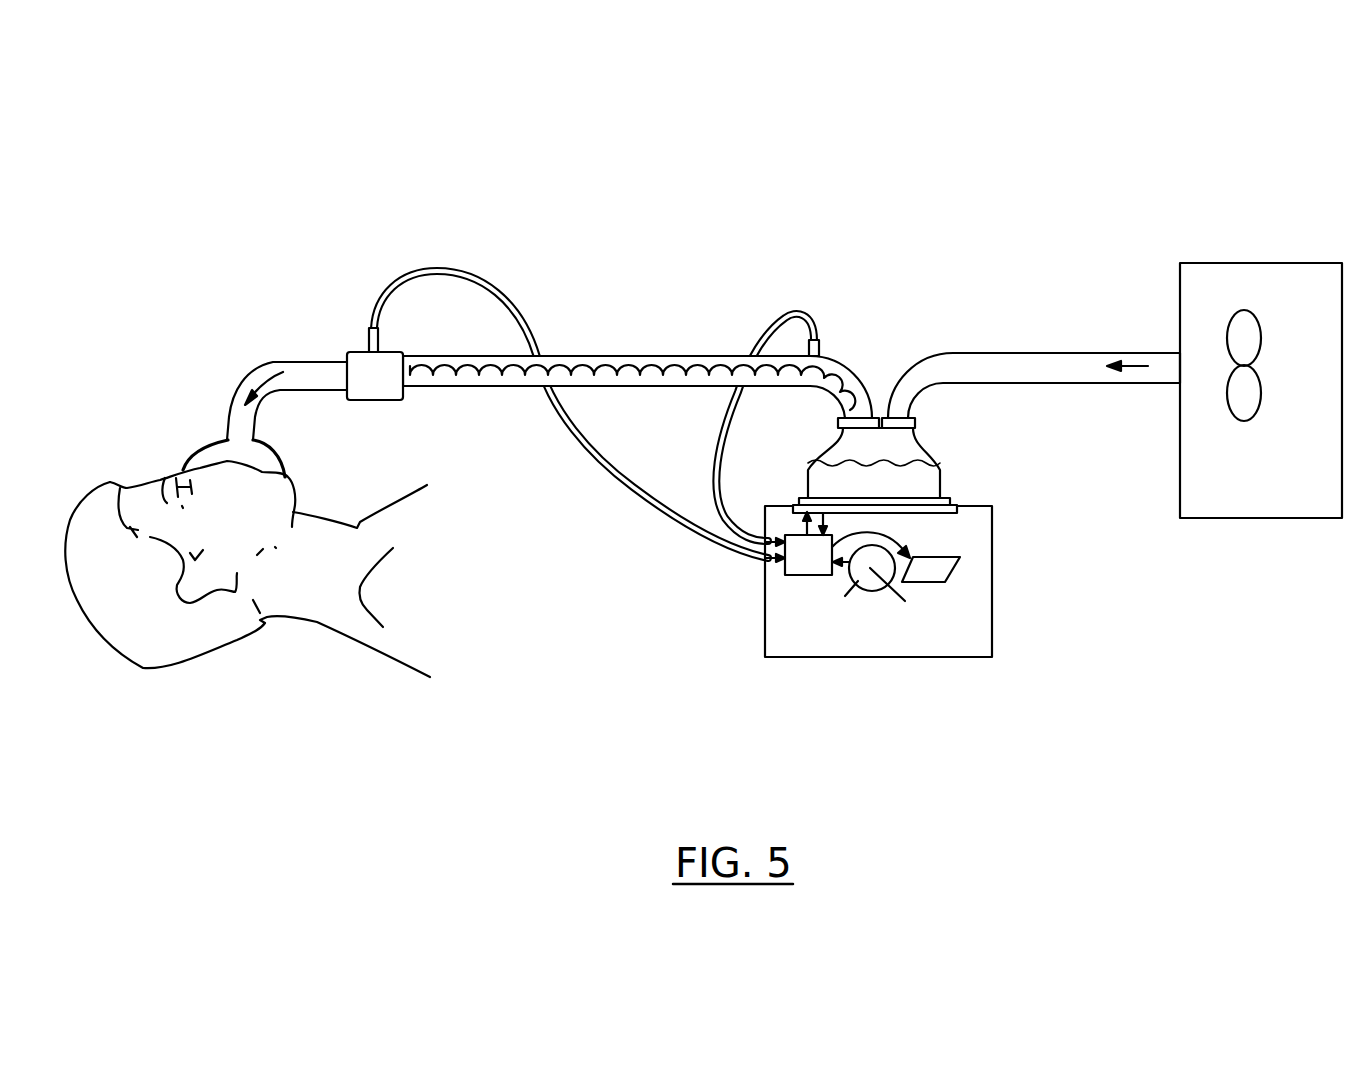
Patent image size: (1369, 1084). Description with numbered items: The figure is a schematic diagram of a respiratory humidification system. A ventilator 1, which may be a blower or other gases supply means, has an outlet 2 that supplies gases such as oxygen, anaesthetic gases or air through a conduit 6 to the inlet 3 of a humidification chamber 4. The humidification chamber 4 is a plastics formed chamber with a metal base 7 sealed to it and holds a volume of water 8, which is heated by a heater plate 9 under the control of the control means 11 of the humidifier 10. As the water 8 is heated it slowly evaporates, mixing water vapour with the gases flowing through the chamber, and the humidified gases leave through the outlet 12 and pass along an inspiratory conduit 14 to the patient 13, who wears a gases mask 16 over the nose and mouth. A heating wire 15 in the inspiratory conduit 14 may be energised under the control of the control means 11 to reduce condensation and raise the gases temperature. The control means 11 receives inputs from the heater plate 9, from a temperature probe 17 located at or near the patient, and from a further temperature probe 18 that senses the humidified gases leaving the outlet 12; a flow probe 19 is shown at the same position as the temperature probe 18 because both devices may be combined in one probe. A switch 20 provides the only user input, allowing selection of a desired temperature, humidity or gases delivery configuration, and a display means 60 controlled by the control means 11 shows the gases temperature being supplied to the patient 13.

The ventilator 1 is at (1268, 520).
The outlet 2 is at (1153, 385).
The inlet 3 is at (915, 421).
The humidification chamber 4 is at (937, 452).
The conduit 6 is at (1047, 350).
The metal base 7 is at (952, 499).
The water 8 is at (874, 479).
The heater plate 9 is at (945, 513).
The humidifier 10 is at (992, 637).
The control means 11 is at (793, 578).
The outlet 12 is at (840, 424).
The patient 13 is at (284, 618).
The inspiratory conduit 14 is at (638, 355).
The heating wire 15 is at (595, 365).
The gases mask 16 is at (225, 425).
The temperature probe 17 is at (362, 333).
The temperature probe 18 is at (822, 350).
The flow probe 19 is at (826, 350).
The switch 20 is at (875, 592).
The display means 60 is at (962, 566).